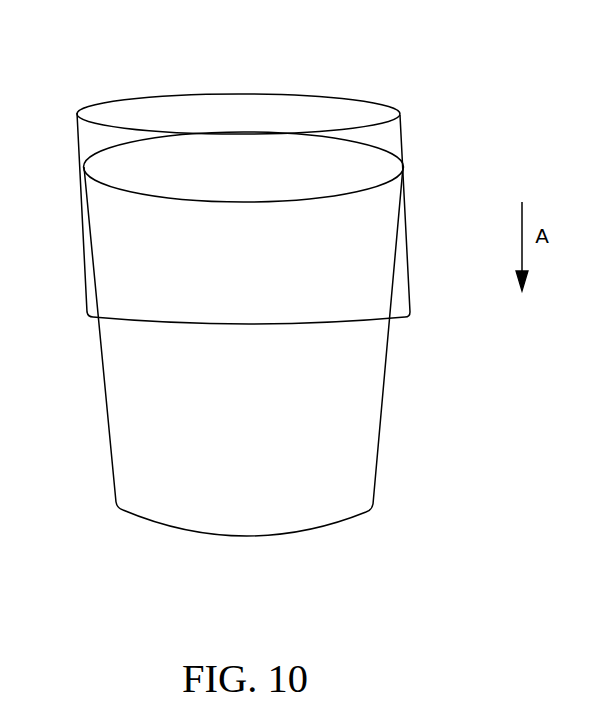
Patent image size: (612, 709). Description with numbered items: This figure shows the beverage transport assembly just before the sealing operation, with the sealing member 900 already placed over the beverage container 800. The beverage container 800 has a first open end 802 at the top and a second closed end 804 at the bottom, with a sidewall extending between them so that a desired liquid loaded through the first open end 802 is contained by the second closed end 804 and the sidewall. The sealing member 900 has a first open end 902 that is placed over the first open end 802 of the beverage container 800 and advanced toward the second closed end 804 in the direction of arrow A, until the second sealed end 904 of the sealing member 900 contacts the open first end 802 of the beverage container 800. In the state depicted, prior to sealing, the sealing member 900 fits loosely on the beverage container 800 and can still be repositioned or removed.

The beverage container 800 is at (219, 372).
The first open end 802 is at (246, 232).
The second closed end 804 is at (240, 562).
The sealing member 900 is at (280, 216).
The first open end 902 is at (246, 353).
The second sealed end 904 is at (245, 98).